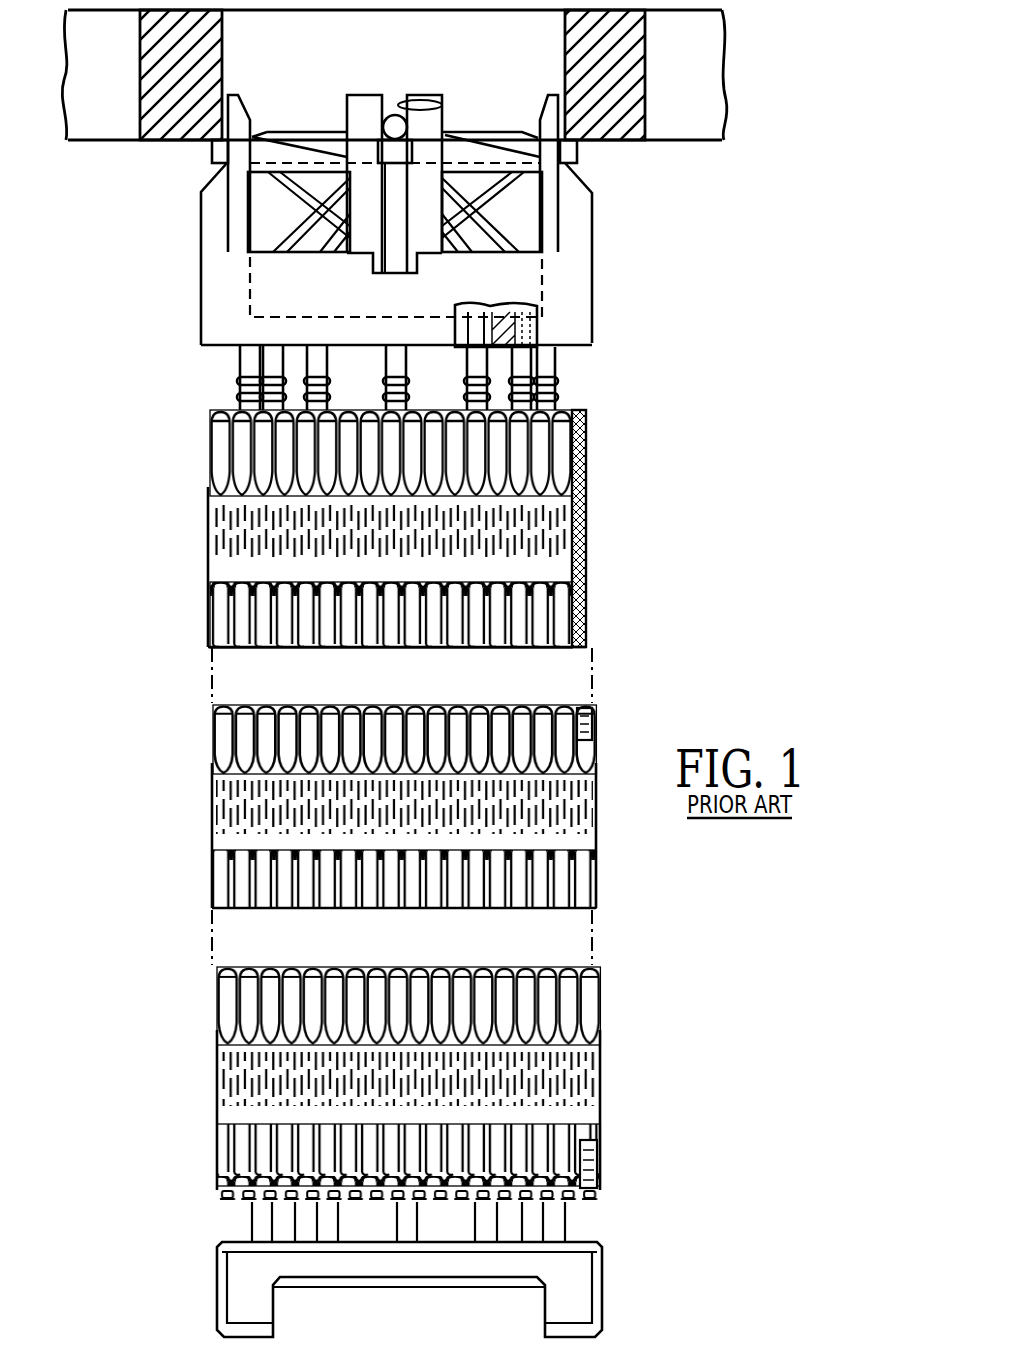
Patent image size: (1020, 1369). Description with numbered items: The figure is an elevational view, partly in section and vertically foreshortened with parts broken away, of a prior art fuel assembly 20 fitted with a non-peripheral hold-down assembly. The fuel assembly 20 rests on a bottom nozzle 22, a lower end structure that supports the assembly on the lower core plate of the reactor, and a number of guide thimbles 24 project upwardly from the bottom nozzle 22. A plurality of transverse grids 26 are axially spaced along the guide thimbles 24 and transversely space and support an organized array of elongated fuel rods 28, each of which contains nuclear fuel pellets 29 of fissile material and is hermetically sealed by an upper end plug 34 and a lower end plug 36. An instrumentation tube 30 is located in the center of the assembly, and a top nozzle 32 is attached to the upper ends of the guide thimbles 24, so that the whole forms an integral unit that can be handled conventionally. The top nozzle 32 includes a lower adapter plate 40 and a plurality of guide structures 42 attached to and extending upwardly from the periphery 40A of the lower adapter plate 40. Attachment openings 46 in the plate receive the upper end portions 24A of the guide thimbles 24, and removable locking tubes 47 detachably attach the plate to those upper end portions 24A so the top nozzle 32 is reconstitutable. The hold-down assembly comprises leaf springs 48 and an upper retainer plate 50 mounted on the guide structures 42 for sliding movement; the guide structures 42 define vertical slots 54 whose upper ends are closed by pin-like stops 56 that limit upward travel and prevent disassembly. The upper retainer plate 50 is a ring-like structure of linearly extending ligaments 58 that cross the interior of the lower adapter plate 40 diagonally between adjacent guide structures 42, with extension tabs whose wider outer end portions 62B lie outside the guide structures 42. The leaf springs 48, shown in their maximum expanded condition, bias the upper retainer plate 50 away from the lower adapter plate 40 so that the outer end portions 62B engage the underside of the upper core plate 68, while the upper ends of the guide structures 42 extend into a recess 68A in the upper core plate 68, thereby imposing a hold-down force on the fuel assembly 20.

The fuel assembly 20 is at (655, 177).
The bottom nozzle 22 is at (604, 1284).
The guide thimbles 24 is at (394, 350).
The upper end portions of the guide thimbles 24A is at (240, 363).
The transverse grids 26 is at (212, 548).
The fuel rods 28 is at (213, 722).
The nuclear fuel pellets 29 is at (588, 624).
The instrumentation tube 30 is at (397, 1220).
The top nozzle 32 is at (599, 252).
The upper end plug 34 is at (212, 421).
The lower end plug 36 is at (218, 1191).
The lower adapter plate 40 is at (599, 322).
The periphery of the lower adapter plate 40A is at (216, 281).
The guide structures 42 is at (247, 101).
The attachment openings 46 is at (523, 308).
The locking tubes 47 is at (534, 352).
The leaf springs 48 is at (286, 192).
The upper retainer plate 50 is at (301, 130).
The slots 54 is at (443, 106).
The stops 56 is at (392, 114).
The ligaments 58 is at (498, 133).
The outer end portions of the extension tabs 62B is at (391, 155).
The upper core plate 68 is at (733, 66).
The recess 68A is at (228, 60).